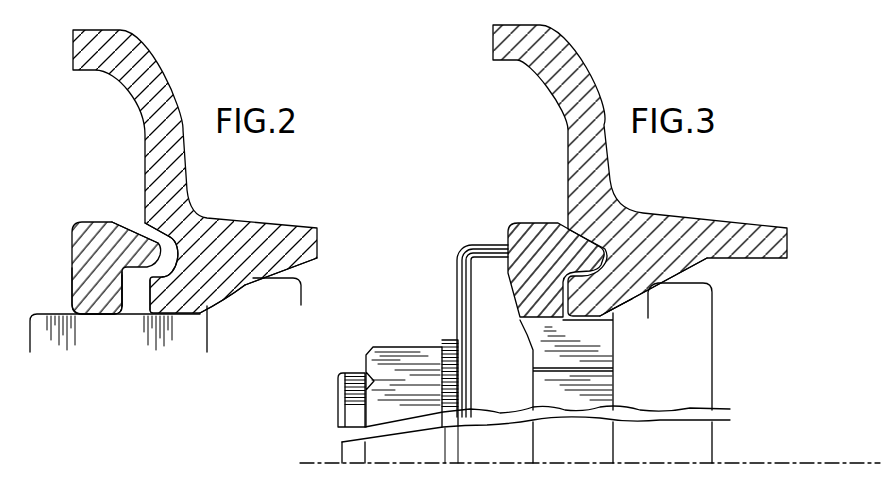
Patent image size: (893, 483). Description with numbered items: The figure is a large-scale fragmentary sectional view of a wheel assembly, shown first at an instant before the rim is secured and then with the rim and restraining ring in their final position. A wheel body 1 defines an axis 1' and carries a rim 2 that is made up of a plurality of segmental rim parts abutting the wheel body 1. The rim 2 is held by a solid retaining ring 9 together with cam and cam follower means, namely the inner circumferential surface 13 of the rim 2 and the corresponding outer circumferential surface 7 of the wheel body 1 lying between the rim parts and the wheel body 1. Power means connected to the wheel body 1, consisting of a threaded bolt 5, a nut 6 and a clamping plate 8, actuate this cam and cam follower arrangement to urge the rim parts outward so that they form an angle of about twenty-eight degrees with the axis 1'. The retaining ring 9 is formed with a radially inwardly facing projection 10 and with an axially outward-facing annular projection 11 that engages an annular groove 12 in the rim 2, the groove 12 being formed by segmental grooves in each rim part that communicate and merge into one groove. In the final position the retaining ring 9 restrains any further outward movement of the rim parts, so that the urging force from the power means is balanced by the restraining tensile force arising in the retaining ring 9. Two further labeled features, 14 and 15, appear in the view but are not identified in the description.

In FIG. 2, the wheel body 1 is at (176, 309).
In FIG. 3, the wheel body 1 is at (693, 373).
In FIG. 3, the axis 1' is at (590, 388).
In FIG. 2, the rim 2 is at (158, 85).
In FIG. 3, the rim 2 is at (583, 73).
In FIG. 3, the threaded bolt 5 is at (350, 385).
In FIG. 3, the nut 6 is at (405, 358).
In FIG. 2, the outer circumferential surface 7 is at (237, 291).
In FIG. 3, the outer circumferential surface 7 is at (630, 321).
In FIG. 3, the clamping plate 8 is at (485, 266).
In FIG. 2, the retaining ring 9 is at (90, 232).
In FIG. 3, the retaining ring 9 is at (535, 238).
In FIG. 2, the radially inwardly facing projection 10 is at (98, 303).
In FIG. 2, the axially outward-facing annular projection 11 is at (150, 262).
In FIG. 2, the annular groove 12 is at (177, 252).
In FIG. 2, the inner circumferential surface 13 is at (249, 280).
In FIG. 3, the inner circumferential surface 13 is at (632, 295).
In FIG. 2, the inclined upper surface of sealing ring 14 is at (136, 226).
In FIG. 2, the gap between sealing ring leg and ring 15 is at (137, 314).